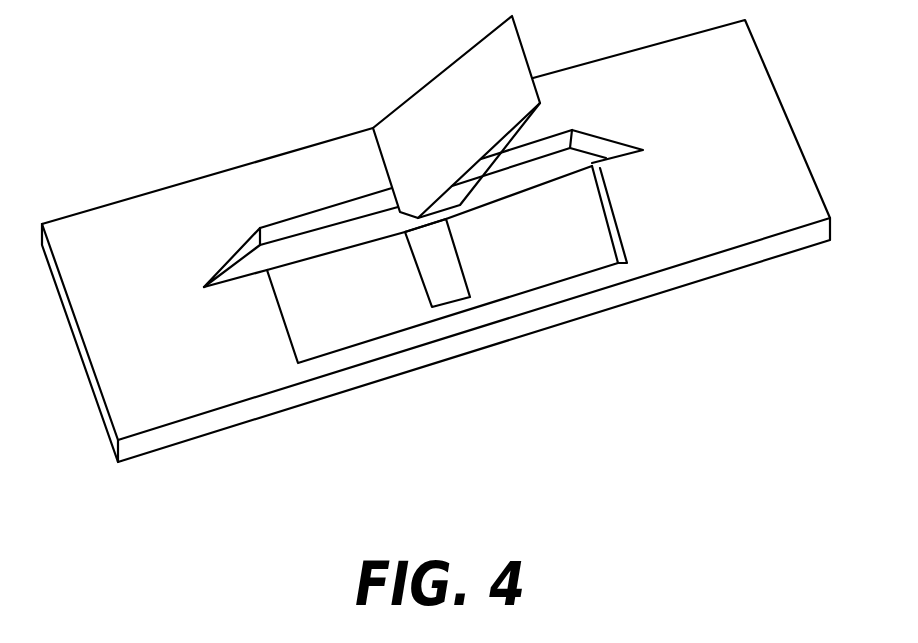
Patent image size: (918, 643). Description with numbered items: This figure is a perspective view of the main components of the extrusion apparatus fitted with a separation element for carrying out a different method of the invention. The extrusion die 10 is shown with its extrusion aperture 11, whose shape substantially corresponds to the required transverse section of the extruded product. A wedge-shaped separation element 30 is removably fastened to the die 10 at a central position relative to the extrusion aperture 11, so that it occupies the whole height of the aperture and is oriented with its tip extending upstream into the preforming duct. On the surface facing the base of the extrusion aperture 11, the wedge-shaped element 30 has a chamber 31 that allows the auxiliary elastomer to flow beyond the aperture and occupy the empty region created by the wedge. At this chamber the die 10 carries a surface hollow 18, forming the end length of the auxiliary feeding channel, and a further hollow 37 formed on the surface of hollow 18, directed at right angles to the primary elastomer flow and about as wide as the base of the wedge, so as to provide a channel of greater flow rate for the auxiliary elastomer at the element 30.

The extrusion die 10 is at (746, 147).
The extrusion aperture 11 is at (547, 176).
The surface hollow 18 is at (322, 337).
The wedge-shaped separation element 30 is at (435, 126).
The chamber 31 is at (403, 212).
The further hollow 37 is at (442, 278).